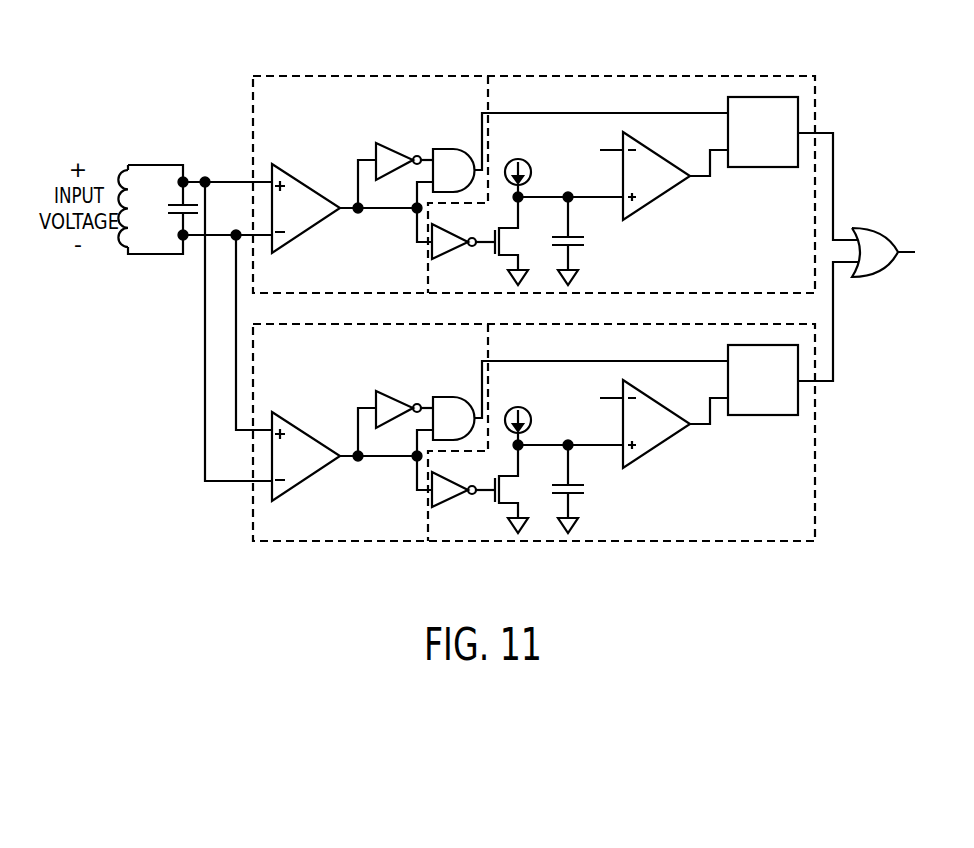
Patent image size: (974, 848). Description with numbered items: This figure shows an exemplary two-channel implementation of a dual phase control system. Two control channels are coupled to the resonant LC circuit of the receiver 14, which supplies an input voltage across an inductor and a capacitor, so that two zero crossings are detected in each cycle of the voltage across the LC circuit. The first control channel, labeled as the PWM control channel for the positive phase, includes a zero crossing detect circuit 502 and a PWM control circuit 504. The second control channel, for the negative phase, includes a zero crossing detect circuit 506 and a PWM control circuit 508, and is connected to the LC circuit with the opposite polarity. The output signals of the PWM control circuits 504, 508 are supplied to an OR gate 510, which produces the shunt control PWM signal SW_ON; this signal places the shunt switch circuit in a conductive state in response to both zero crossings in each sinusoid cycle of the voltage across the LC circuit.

The receiver 14 is at (162, 164).
The zero crossing detect circuit 502 is at (348, 75).
The PWM control circuit 504 is at (534, 173).
The zero crossing detect circuit 506 is at (535, 462).
The PWM control circuit 508 is at (534, 462).
The OR gate 510 is at (868, 229).